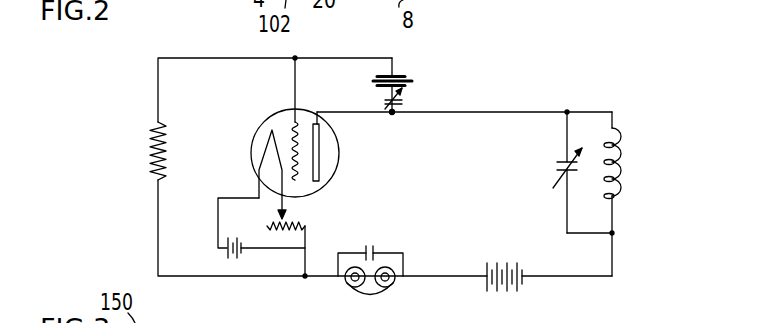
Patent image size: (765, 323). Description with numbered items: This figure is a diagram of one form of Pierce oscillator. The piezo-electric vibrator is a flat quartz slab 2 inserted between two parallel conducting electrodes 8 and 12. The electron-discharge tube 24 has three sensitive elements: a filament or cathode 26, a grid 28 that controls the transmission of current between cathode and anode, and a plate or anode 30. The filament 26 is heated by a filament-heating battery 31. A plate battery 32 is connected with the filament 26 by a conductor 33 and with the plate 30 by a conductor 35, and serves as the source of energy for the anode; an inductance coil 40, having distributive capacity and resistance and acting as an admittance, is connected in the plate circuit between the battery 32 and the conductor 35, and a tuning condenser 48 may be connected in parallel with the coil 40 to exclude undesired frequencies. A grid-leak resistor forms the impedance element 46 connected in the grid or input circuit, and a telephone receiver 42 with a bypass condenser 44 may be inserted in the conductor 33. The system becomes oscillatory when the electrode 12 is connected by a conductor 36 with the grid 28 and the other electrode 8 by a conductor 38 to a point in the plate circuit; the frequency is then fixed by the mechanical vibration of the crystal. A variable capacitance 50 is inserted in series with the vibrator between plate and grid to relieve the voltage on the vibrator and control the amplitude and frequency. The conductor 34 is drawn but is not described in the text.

The quartz slab 2 is at (411, 82).
The electrode 8 is at (404, 99).
The electrode 12 is at (422, 70).
The electron-discharge tube 24 is at (292, 138).
The filament 26 is at (262, 147).
The grid 28 is at (294, 176).
The plate 30 is at (320, 147).
The filament-heating battery 31 is at (239, 265).
The plate battery 32 is at (500, 265).
The conductor 33 is at (322, 276).
The conductor 34 is at (157, 70).
The conductor 35 is at (612, 248).
The conductor 36 is at (357, 58).
The conductor 38 is at (397, 113).
The inductance coil 40 is at (622, 150).
The telephone receiver 42 is at (350, 294).
The bypass condenser 44 is at (373, 248).
The impedance element 46 is at (150, 152).
The tuning condenser 48 is at (556, 168).
The variable capacitance 50 is at (386, 102).